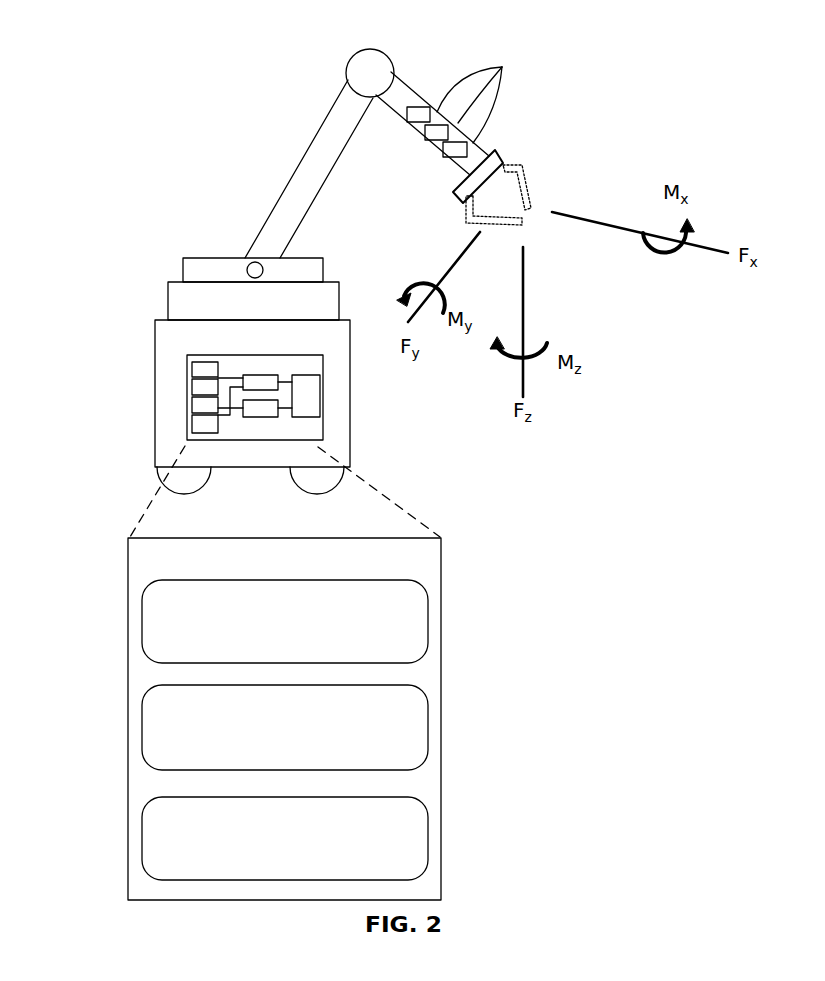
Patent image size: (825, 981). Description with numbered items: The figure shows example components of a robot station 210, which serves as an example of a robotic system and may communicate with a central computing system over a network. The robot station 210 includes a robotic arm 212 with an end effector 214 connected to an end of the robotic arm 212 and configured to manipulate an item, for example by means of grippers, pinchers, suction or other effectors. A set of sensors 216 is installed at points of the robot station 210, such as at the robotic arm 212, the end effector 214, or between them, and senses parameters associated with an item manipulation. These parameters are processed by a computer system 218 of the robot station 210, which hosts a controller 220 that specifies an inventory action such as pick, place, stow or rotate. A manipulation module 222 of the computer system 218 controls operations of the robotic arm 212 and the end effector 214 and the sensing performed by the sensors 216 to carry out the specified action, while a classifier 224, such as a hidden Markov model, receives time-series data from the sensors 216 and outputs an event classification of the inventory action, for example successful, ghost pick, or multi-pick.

The robot station 210 is at (350, 425).
The robotic arm 212 is at (400, 95).
The end effector 214 is at (520, 173).
The sensors 216 is at (502, 67).
The computer system 218 is at (188, 397).
The controller 220 is at (285, 621).
The manipulation module 222 is at (285, 727).
The classifier 224 is at (285, 838).